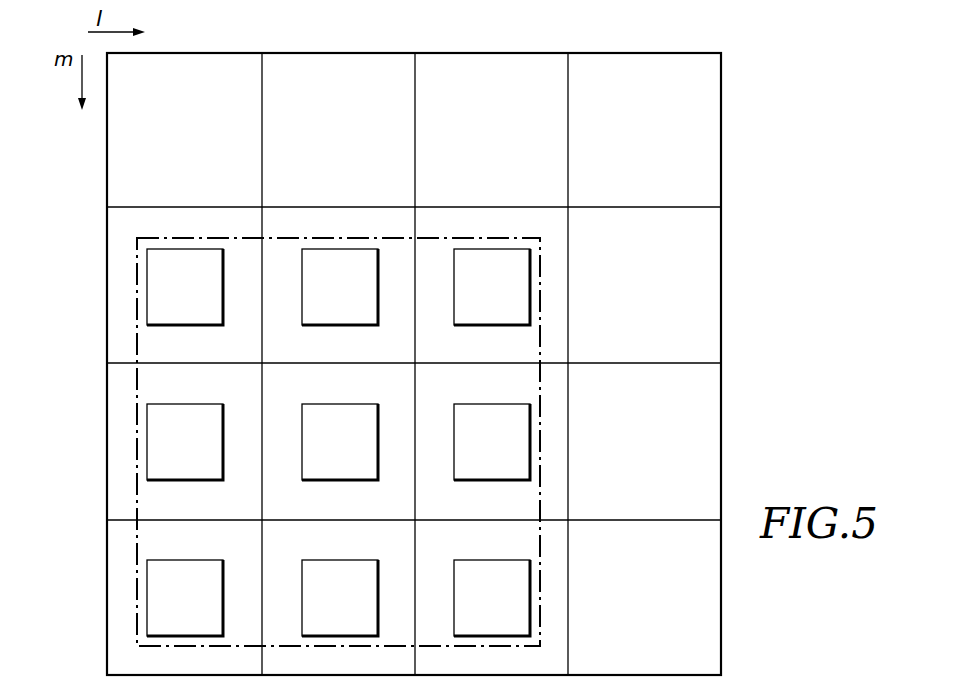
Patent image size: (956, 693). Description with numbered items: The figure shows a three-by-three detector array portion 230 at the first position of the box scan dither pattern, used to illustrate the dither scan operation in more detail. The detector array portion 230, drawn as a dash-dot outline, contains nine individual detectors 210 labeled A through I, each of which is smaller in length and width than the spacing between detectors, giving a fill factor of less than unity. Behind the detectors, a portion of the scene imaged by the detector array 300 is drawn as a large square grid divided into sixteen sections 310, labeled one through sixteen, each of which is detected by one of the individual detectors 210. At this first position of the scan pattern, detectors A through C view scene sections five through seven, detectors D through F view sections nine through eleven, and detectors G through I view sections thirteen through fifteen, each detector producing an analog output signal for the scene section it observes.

The scene portion 300 is at (452, 342).
The scene sections 310 is at (702, 165).
The individual detector 210 is at (160, 458).
The detector array portion 230 is at (137, 628).